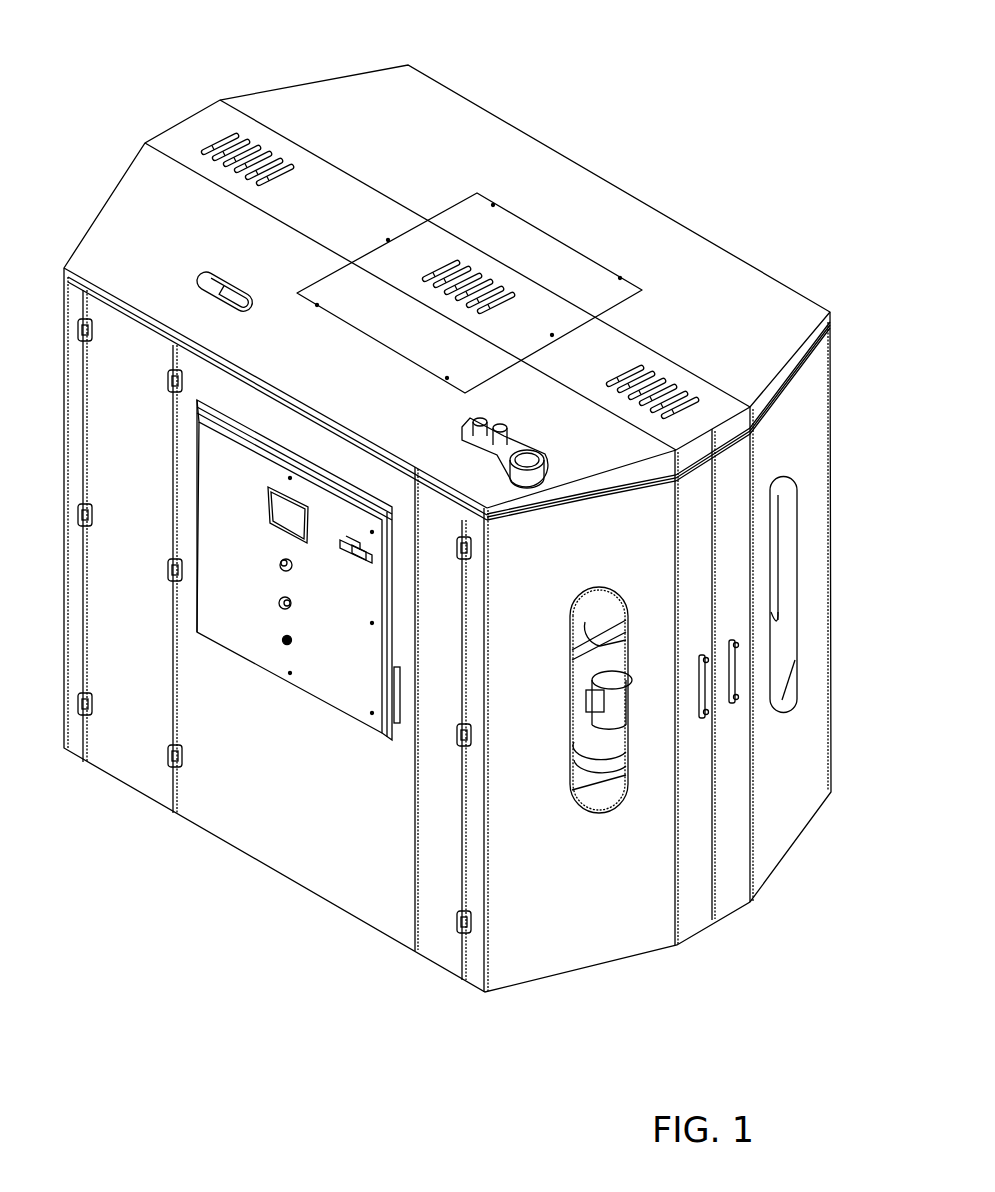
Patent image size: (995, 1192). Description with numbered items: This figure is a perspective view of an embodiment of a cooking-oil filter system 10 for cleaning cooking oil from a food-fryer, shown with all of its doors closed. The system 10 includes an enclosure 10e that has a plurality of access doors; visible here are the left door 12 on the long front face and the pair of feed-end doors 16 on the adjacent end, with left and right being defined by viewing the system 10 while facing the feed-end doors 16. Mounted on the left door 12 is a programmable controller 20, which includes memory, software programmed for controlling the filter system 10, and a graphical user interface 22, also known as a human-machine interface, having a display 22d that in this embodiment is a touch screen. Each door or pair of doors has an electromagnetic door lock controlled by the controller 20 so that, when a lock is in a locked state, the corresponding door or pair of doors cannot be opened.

The cooking-oil filter system 10 is at (447, 496).
The enclosure 10e is at (389, 162).
The left door 12 is at (272, 806).
The feed-end doors 16 is at (580, 914).
The programmable controller 20 is at (331, 694).
The graphical user interface 22 is at (329, 453).
The display 22d is at (288, 523).